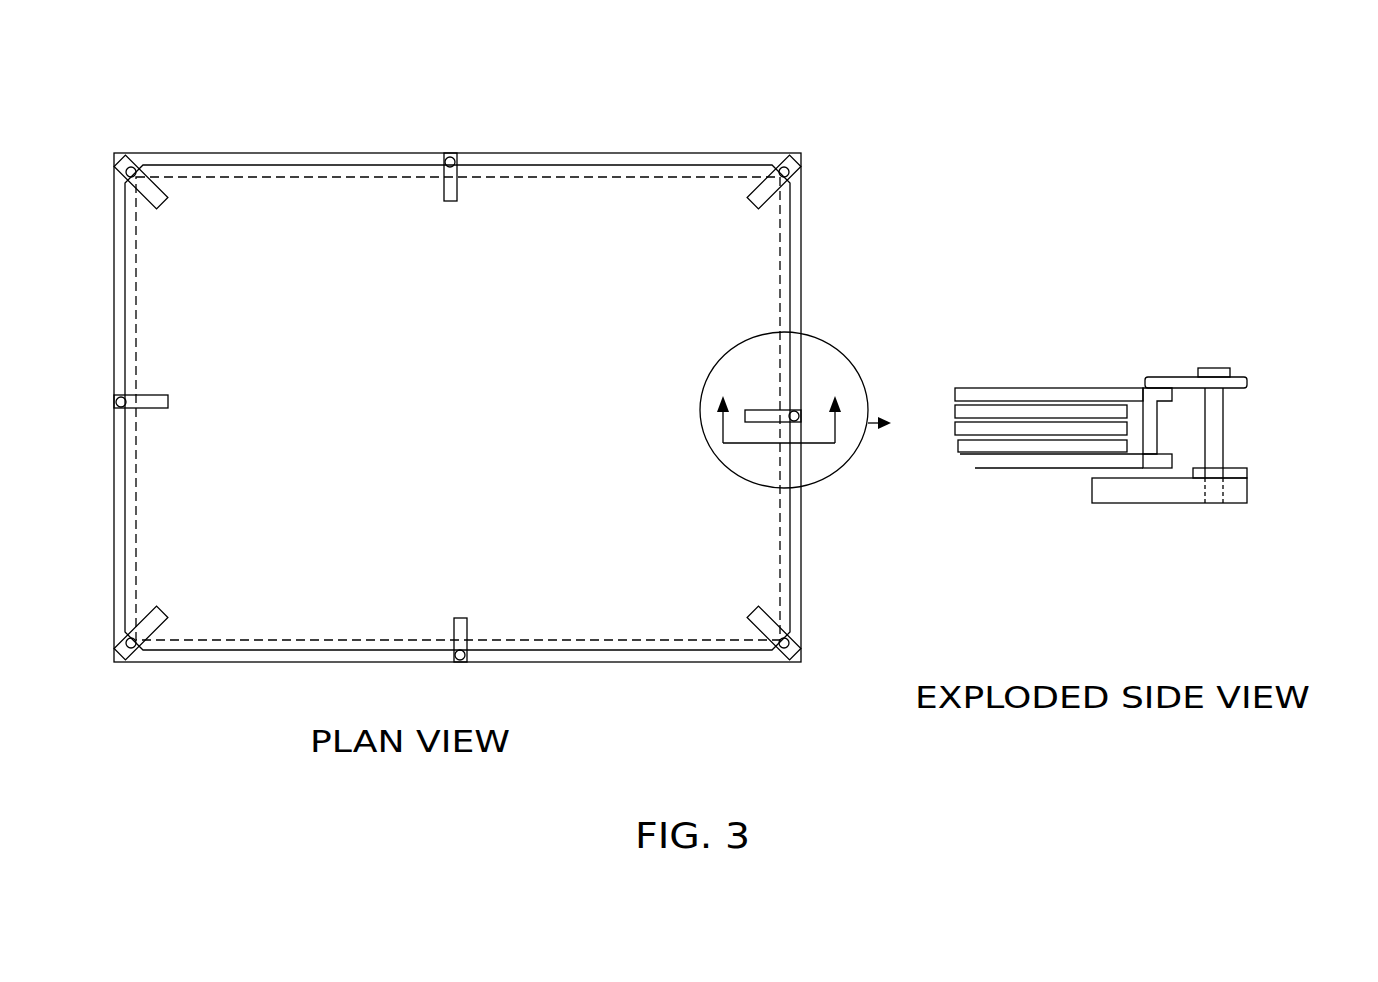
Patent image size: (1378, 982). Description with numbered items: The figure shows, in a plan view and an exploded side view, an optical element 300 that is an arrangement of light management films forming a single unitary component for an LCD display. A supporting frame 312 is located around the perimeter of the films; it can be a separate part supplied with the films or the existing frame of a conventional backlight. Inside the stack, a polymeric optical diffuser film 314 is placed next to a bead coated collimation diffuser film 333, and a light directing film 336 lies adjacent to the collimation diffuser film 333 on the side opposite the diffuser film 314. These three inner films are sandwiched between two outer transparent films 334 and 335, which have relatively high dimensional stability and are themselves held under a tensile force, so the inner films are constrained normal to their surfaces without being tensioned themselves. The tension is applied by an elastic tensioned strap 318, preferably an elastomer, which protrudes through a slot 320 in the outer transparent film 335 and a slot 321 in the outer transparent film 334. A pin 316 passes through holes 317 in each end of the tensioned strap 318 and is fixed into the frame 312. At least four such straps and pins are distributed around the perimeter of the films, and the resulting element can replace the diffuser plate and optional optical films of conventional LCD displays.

The optical element 300 is at (728, 71).
The supporting frame 312 is at (1145, 500).
The polymeric optical diffuser film 314 is at (1090, 446).
The pin 316 is at (1213, 400).
The holes 317 is at (1230, 373).
The tensioned strap 318 is at (1192, 468).
The slot 320 is at (1145, 388).
The slot 321 is at (1146, 468).
The bead coated collimation diffuser film 333 is at (1002, 436).
The outer transparent film 334 is at (1010, 468).
The outer transparent film 335 is at (1033, 388).
The light directing film 336 is at (1023, 412).